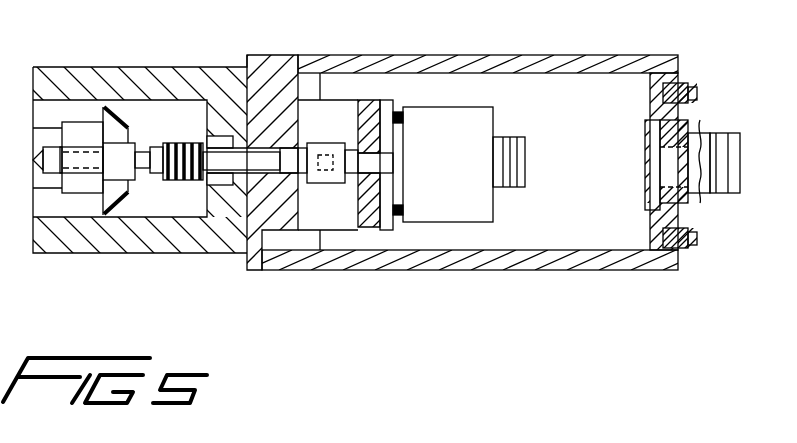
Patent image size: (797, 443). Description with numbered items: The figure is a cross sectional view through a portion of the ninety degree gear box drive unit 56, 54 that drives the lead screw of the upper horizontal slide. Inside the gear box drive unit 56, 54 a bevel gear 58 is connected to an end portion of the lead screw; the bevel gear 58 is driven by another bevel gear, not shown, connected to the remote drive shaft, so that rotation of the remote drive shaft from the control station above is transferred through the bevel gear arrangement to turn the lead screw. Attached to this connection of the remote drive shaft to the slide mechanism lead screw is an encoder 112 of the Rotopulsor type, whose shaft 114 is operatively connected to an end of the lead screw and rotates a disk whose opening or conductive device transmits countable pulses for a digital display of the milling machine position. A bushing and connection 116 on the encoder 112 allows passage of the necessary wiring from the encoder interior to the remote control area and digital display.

The housing 54 is at (145, 67).
The 90 degree gear box drive unit 56 is at (243, 154).
The bevel gear 58 is at (117, 193).
The encoder 112 is at (461, 277).
The shaft 114 is at (358, 150).
The bushing and connection 116 is at (708, 150).